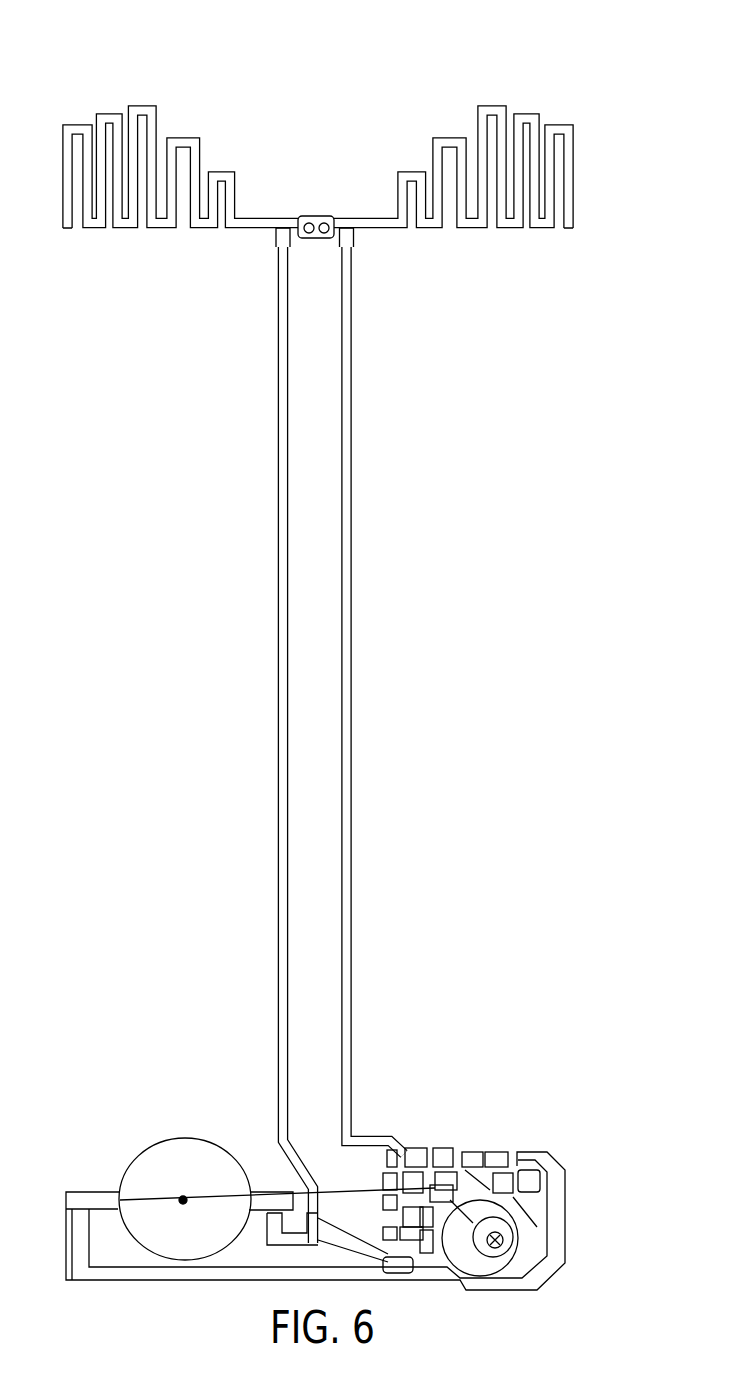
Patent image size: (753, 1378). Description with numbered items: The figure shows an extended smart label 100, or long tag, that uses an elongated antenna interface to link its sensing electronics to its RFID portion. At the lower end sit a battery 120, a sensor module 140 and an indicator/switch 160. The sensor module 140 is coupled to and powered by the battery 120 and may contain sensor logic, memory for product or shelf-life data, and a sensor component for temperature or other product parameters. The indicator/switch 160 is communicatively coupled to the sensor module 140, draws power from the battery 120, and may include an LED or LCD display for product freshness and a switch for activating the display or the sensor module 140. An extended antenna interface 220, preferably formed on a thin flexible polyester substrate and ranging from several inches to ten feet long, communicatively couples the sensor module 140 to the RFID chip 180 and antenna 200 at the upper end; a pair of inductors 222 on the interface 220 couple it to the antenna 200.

The smart label 100 is at (603, 68).
The battery 120 is at (137, 1158).
The sensor module 140 is at (545, 1063).
The indicator/switch 160 is at (563, 1225).
The RFID chip 180 is at (300, 218).
The antenna 200 is at (573, 197).
The extended antenna interface 220 is at (263, 231).
The inductors 222 is at (354, 238).